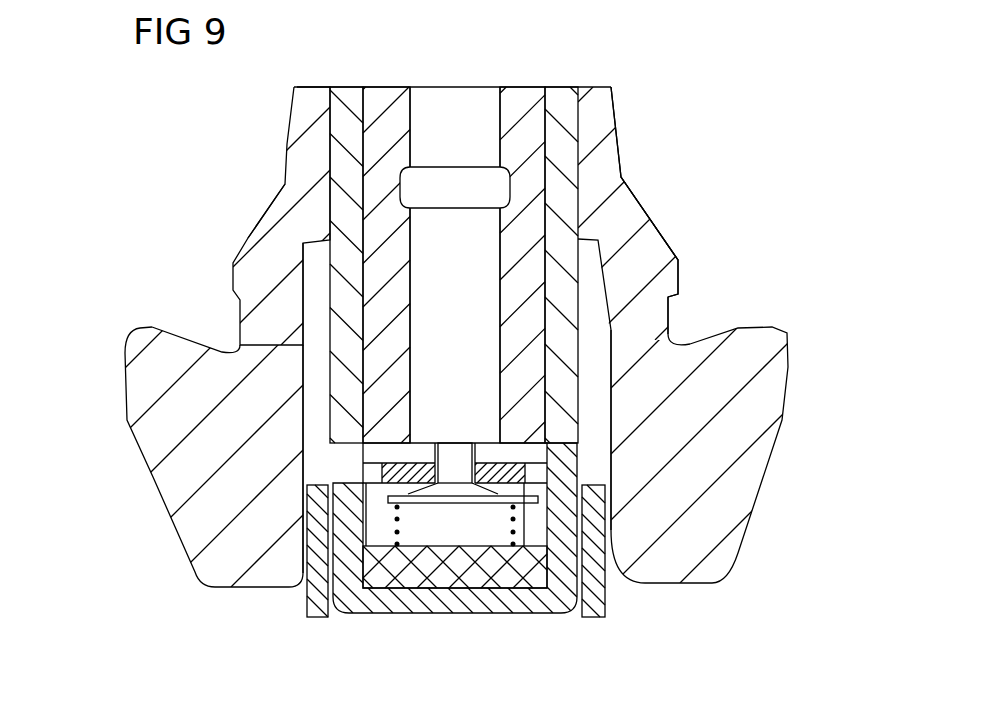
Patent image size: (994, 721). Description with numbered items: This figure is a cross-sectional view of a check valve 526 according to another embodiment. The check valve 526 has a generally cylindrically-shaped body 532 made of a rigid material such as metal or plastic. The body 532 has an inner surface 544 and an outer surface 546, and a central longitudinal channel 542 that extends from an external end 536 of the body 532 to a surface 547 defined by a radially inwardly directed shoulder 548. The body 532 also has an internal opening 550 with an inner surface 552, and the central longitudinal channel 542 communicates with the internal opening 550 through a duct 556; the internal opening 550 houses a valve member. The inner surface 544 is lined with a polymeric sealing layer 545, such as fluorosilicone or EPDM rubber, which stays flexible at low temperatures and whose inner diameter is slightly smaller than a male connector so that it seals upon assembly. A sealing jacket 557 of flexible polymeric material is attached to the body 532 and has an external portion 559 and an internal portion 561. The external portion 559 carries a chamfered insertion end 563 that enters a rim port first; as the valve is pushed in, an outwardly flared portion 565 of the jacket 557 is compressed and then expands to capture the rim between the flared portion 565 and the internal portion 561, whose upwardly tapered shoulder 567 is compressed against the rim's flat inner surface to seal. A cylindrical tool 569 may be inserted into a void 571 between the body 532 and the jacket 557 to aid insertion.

The check valve 526 is at (680, 178).
The body 532 is at (597, 350).
The external end 536 is at (348, 87).
The central longitudinal channel 542 is at (475, 318).
The inner surface 544 is at (533, 103).
The polymeric sealing layer 545 is at (518, 100).
The outer surface 546 is at (578, 281).
The surface 547 is at (412, 113).
The radially inwardly directed shoulder 548 is at (410, 457).
The internal opening 550 is at (432, 535).
The inner surface 552 is at (388, 601).
The duct 556 is at (462, 453).
The sealing jacket 557 is at (663, 214).
The external portion 559 is at (108, 100).
The internal portion 561 is at (112, 607).
The chamfered insertion end 563 is at (600, 87).
The outwardly flared portion 565 is at (247, 240).
The upwardly tapered shoulder 567 is at (168, 327).
The cylindrical tool 569 is at (307, 603).
The void 571 is at (303, 430).